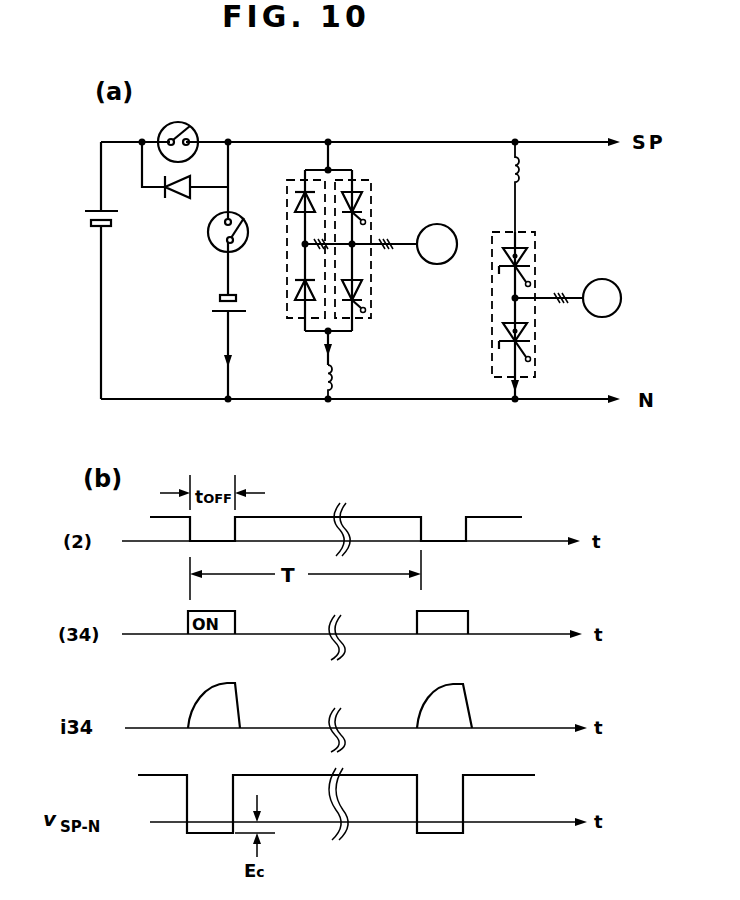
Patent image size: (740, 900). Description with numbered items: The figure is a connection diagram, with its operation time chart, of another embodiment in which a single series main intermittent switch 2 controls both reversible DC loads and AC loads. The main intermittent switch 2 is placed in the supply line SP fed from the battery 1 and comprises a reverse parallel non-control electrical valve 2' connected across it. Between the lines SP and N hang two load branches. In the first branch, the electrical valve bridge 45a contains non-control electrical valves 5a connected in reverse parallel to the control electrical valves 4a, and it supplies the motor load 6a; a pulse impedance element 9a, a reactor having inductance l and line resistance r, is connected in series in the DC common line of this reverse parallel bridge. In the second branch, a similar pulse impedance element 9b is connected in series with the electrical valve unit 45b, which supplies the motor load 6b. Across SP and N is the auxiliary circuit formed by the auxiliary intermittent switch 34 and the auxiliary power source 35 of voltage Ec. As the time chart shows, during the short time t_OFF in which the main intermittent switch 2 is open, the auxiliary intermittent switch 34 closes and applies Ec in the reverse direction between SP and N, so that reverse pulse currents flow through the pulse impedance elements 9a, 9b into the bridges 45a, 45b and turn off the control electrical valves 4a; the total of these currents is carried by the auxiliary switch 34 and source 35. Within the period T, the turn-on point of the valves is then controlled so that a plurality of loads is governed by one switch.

The battery 1 is at (82, 215).
The main intermittent switch 2 is at (178, 127).
The reverse parallel non-control electrical valve 2' is at (185, 182).
The auxiliary intermittent switch 34 is at (208, 233).
The auxiliary power source 35 is at (214, 299).
The electrical valve bridge 45a is at (367, 128).
The non-control electrical valves 5a is at (288, 229).
The control electrical valves 4a is at (425, 200).
The load 6a is at (481, 200).
The pulse impedance element 9a is at (335, 383).
The pulse impedance element 9b is at (521, 170).
The electrical valve bridge 45b is at (590, 253).
The load 6b is at (640, 261).